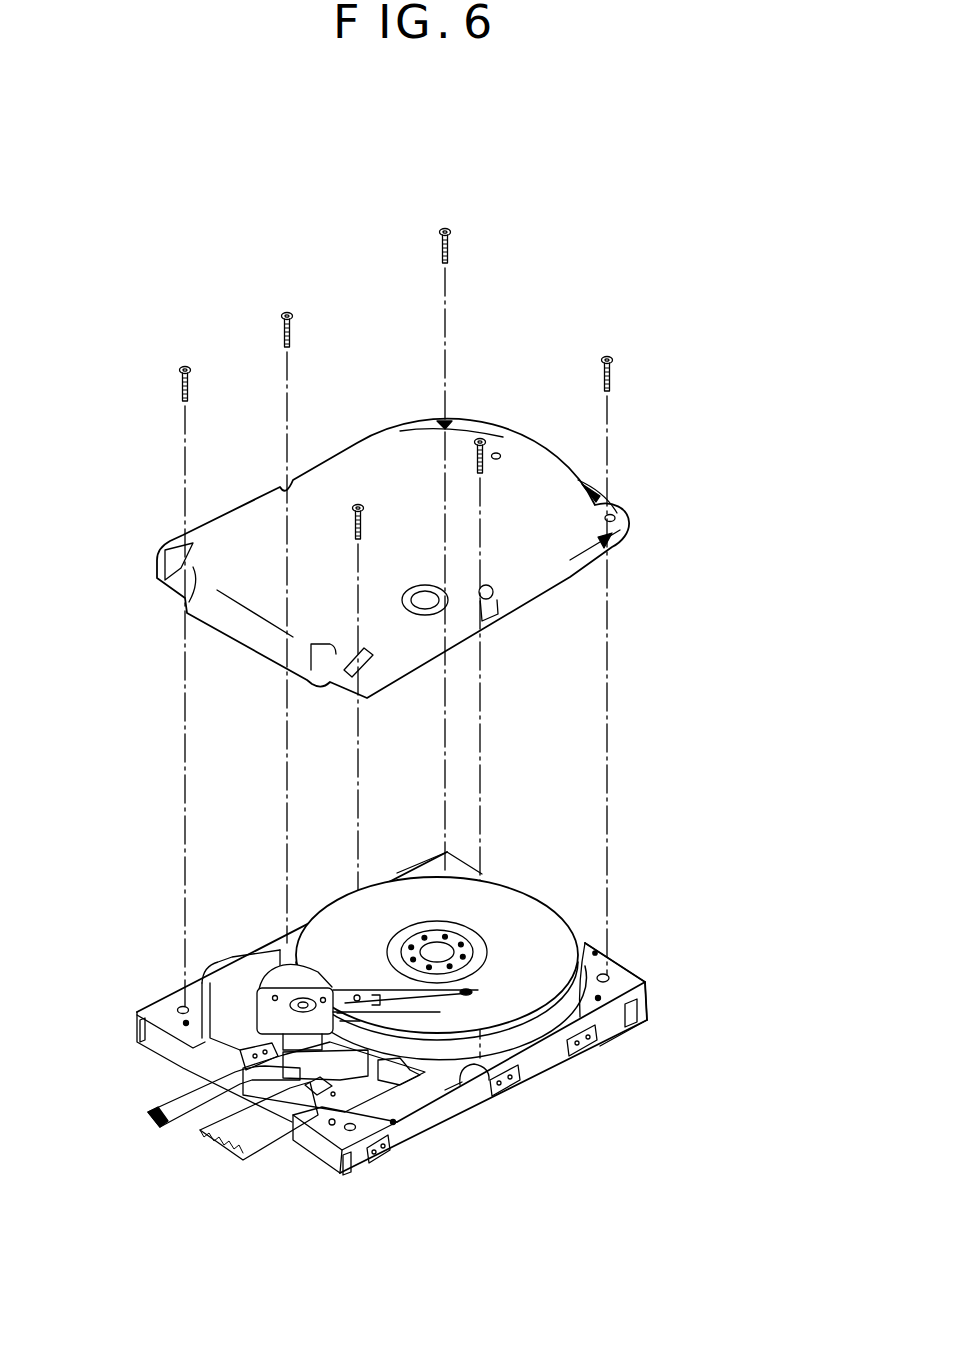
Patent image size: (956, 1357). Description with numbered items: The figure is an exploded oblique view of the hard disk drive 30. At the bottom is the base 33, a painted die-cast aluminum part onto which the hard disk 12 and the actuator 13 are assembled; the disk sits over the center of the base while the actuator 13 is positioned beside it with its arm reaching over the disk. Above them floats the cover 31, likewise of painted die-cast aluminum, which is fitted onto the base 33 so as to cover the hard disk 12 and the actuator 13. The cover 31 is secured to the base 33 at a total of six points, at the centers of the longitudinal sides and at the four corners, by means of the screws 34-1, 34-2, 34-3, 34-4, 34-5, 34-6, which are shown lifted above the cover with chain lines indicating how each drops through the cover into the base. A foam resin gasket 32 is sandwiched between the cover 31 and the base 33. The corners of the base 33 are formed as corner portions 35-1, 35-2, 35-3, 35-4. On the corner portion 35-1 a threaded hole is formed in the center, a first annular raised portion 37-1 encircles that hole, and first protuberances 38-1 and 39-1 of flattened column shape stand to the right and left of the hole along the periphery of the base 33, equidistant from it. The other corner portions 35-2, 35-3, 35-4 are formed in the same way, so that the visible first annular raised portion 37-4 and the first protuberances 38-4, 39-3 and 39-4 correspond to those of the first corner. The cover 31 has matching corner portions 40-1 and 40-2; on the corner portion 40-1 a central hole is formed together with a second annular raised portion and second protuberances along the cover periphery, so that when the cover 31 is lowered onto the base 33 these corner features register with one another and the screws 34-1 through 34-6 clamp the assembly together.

The hard disk drive 30 is at (711, 247).
The cover 31 is at (358, 440).
The foam resin gasket 32 is at (463, 1080).
The base 33 is at (555, 1078).
The hard disk 12 is at (528, 918).
The actuator 13 is at (323, 990).
The screw 34-1 is at (612, 372).
The screw 34-2 is at (452, 243).
The screw 34-3 is at (183, 383).
The screw 34-4 is at (352, 524).
The screw 34-5 is at (476, 455).
The screw 34-6 is at (280, 326).
The corner portion of the base 35-1 is at (643, 978).
The corner portion of the base 35-2 is at (425, 853).
The corner portion of the base 35-3 is at (157, 1012).
The corner portion of the base 35-4 is at (343, 1140).
The first annular raised portion 37-1 is at (609, 977).
The first annular raised portion 37-4 is at (182, 1006).
The first protuberance 38-1 is at (602, 1002).
The first protuberance 38-4 is at (185, 992).
The first protuberance 39-1 is at (597, 953).
The first protuberance 39-3 is at (185, 1023).
The first protuberance 39-4 is at (393, 1122).
The corner portion of the cover 40-1 is at (623, 518).
The corner portion of the cover 40-2 is at (445, 420).